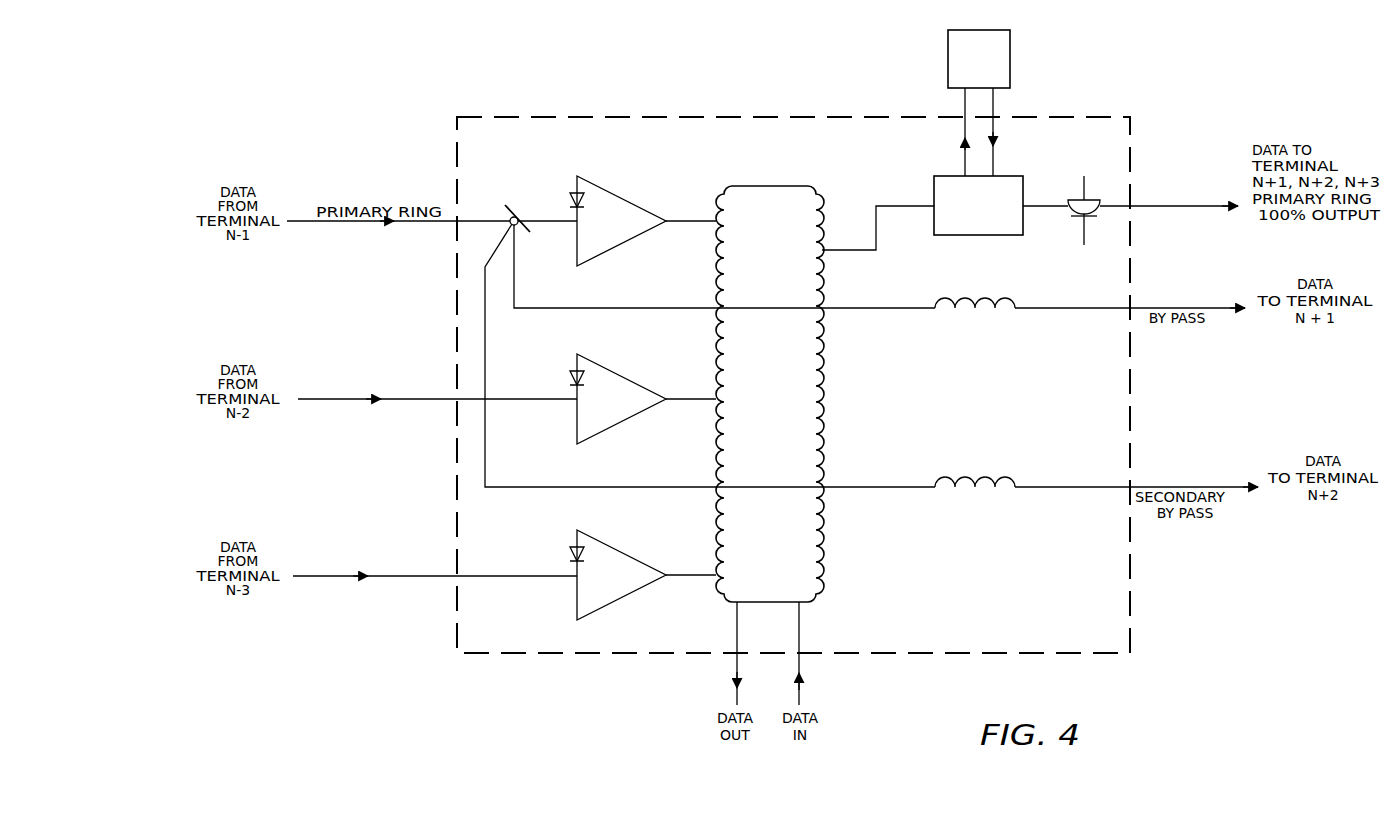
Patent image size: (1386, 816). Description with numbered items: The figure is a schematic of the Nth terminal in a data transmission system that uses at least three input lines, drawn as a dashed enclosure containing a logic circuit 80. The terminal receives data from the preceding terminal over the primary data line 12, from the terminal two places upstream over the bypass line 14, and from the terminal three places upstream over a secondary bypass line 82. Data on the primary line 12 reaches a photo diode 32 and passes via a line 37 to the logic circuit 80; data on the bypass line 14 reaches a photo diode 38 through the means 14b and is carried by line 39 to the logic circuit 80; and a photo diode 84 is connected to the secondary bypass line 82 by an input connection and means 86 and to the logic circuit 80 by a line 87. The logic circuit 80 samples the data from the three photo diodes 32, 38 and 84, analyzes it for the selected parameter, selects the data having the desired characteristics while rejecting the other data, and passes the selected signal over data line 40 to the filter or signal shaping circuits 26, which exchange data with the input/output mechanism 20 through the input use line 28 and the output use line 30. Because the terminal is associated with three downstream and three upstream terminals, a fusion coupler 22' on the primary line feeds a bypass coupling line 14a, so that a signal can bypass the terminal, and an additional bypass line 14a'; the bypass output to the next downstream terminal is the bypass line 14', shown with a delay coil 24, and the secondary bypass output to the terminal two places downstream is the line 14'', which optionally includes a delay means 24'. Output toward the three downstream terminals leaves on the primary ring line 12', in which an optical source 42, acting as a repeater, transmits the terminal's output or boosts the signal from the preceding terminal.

The primary ring optical line 12 is at (400, 234).
The primary ring optical line 12' is at (1130, 220).
The bypass ring optical fiber line 14 is at (377, 419).
The bypass ring optical fiber line 14' is at (1130, 290).
The secondary bypass line 14'' is at (1136, 469).
The bypass coupling line and means 14a is at (724, 266).
The additional bypass line 14a' is at (710, 355).
The means 14b is at (538, 398).
The input/output mechanism 20 is at (992, 70).
The fusion coupler 22' is at (529, 197).
The bypass delay coil 24 is at (965, 323).
The delay means 24' is at (960, 501).
The filter or signal shaping circuits 26 is at (992, 217).
The input use line 28 is at (960, 127).
The output use line 30 is at (996, 126).
The photo diode 32 is at (625, 178).
The line 37 is at (695, 223).
The photo diode 38 is at (627, 372).
The line 39 is at (688, 401).
The data line 40 is at (860, 252).
The optical source 42 is at (1068, 222).
The logic circuit 80 is at (824, 178).
The secondary bypass line 82 is at (385, 578).
The photo diode 84 is at (637, 547).
The input connection and means 86 is at (530, 578).
The line 87 is at (695, 578).